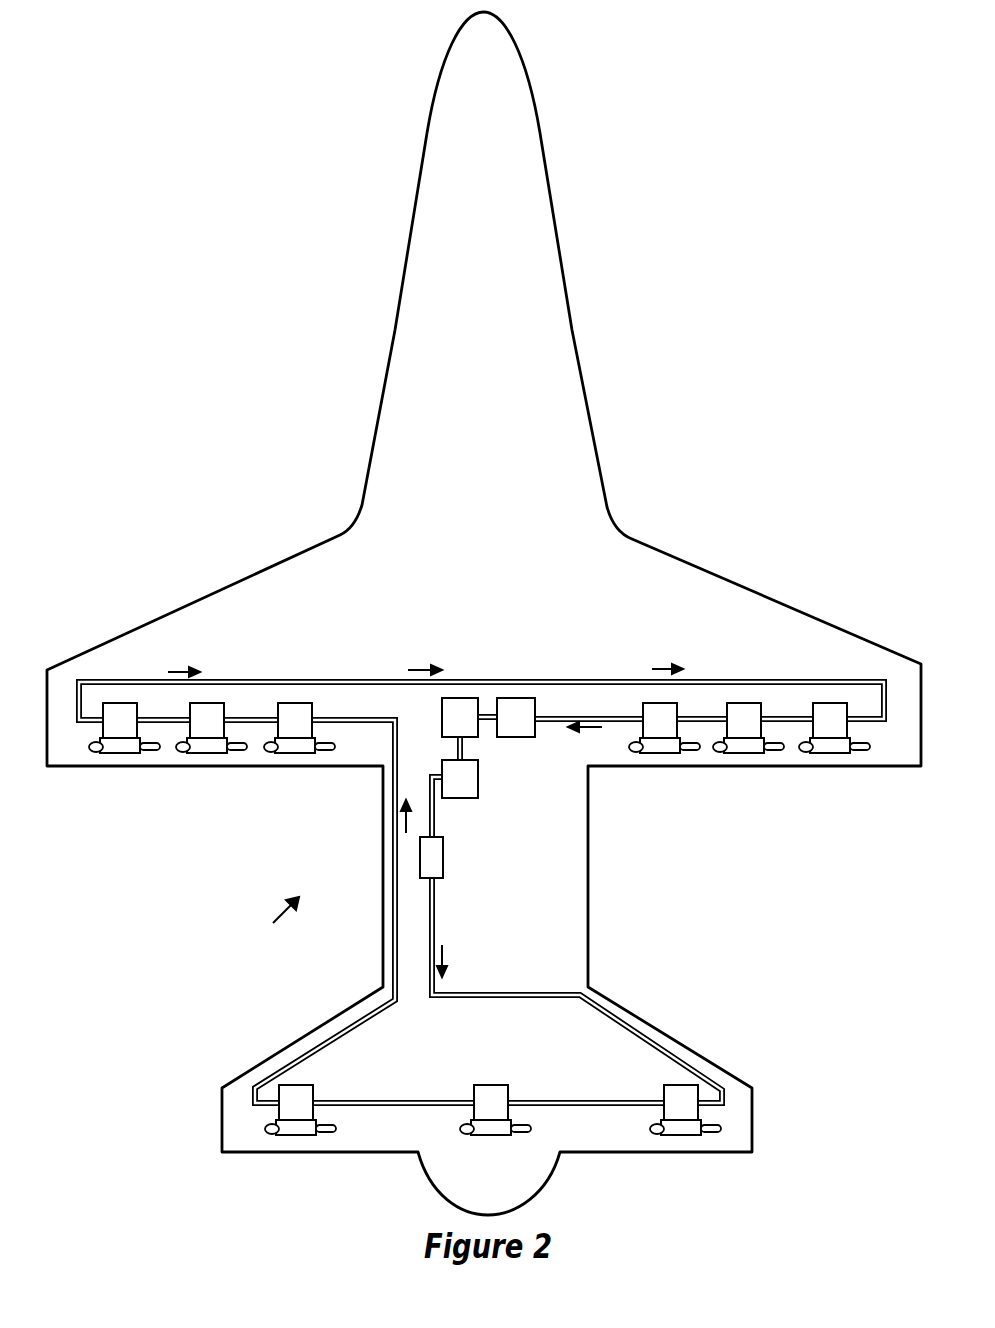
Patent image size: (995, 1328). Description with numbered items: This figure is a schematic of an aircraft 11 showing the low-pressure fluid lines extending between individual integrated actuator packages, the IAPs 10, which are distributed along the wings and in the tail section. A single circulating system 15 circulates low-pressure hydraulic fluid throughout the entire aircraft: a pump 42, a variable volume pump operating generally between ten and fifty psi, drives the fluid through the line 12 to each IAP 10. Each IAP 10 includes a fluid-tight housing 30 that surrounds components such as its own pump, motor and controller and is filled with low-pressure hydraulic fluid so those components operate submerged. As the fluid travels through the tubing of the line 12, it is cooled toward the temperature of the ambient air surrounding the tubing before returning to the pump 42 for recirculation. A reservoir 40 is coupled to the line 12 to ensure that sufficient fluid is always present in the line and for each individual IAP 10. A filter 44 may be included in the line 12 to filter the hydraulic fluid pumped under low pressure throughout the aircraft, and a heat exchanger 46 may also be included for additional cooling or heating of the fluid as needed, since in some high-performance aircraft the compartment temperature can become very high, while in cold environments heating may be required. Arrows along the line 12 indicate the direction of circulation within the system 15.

The IAP 10 is at (118, 753).
The aircraft 11 is at (597, 457).
The line 12 is at (362, 680).
The circulating system 15 is at (425, 820).
The housing 30 is at (106, 703).
The reservoir 40 is at (442, 723).
The pump 42 is at (478, 790).
The filter 44 is at (443, 862).
The heat exchanger 46 is at (513, 739).